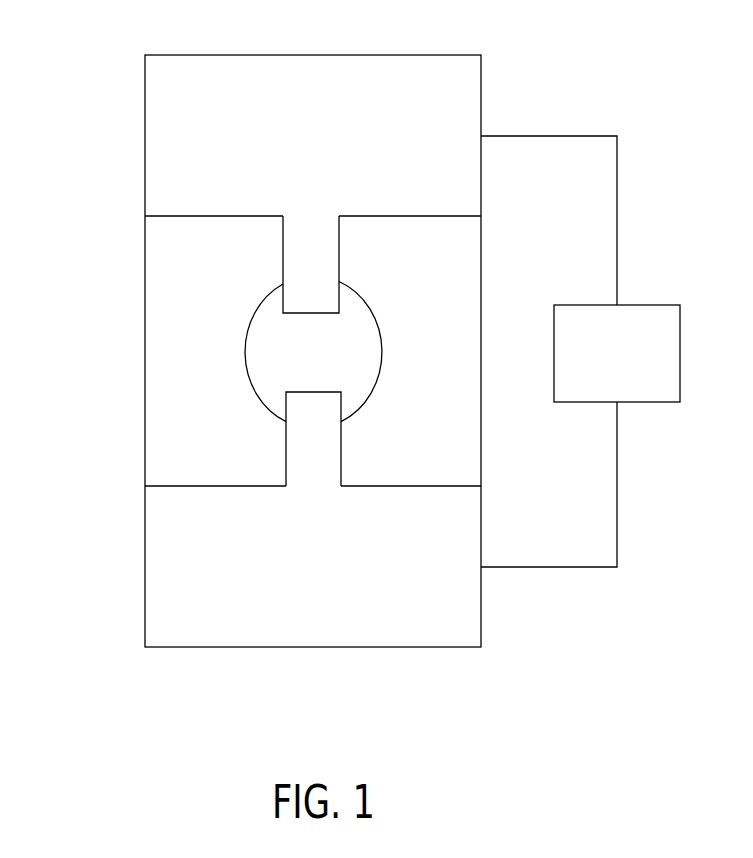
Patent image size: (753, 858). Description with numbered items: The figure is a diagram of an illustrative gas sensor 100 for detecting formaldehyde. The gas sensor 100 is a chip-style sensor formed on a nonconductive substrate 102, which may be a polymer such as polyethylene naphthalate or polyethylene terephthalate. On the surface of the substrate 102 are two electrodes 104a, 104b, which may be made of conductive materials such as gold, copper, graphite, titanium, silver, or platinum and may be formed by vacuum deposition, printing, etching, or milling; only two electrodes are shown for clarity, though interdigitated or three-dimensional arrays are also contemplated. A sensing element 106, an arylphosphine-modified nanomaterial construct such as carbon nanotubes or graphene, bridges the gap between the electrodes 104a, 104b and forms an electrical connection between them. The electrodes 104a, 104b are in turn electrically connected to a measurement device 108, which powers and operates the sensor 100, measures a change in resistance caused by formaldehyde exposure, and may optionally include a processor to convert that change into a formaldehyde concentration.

The gas sensor 100 is at (98, 146).
The nonconductive substrate 102 is at (175, 346).
The electrode 104a is at (339, 258).
The electrode 104b is at (341, 470).
The sensing element 106 is at (338, 360).
The measurement device 108 is at (648, 305).